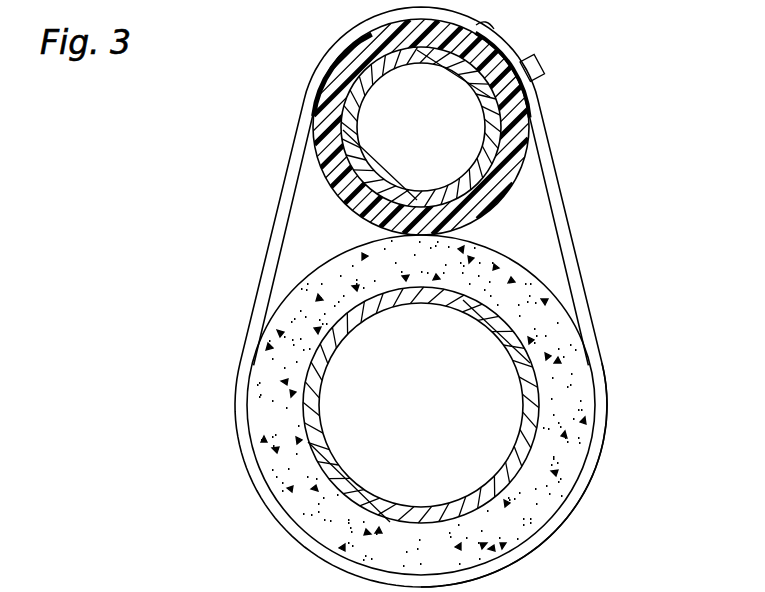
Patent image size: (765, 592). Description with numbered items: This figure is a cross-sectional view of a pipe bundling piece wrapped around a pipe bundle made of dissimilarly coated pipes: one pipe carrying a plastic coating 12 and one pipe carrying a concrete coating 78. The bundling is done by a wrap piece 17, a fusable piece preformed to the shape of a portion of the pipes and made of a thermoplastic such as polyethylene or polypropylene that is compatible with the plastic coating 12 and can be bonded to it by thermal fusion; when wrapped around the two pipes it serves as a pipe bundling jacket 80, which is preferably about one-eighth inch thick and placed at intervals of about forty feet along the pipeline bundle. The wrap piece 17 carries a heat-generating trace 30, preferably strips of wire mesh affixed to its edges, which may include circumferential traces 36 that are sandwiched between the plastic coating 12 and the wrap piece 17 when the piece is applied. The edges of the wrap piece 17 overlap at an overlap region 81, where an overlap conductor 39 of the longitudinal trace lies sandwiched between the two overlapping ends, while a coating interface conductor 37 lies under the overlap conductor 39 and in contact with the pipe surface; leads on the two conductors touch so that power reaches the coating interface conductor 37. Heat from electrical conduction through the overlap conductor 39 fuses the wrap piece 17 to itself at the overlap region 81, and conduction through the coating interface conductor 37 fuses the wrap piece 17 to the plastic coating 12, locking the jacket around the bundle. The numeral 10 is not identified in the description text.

The pipe 10 is at (350, 157).
The plastic coating 12 is at (325, 107).
The wrap piece 17 is at (592, 484).
The heat-generating trace 30 is at (342, 53).
The circumferential trace 36 is at (382, 27).
The coating interface conductor 37 is at (545, 72).
The overlap conductor 39 is at (522, 54).
The concrete coating 78 is at (573, 407).
The pipe bundling jacket 80 is at (262, 292).
The overlap region 81 is at (505, 30).